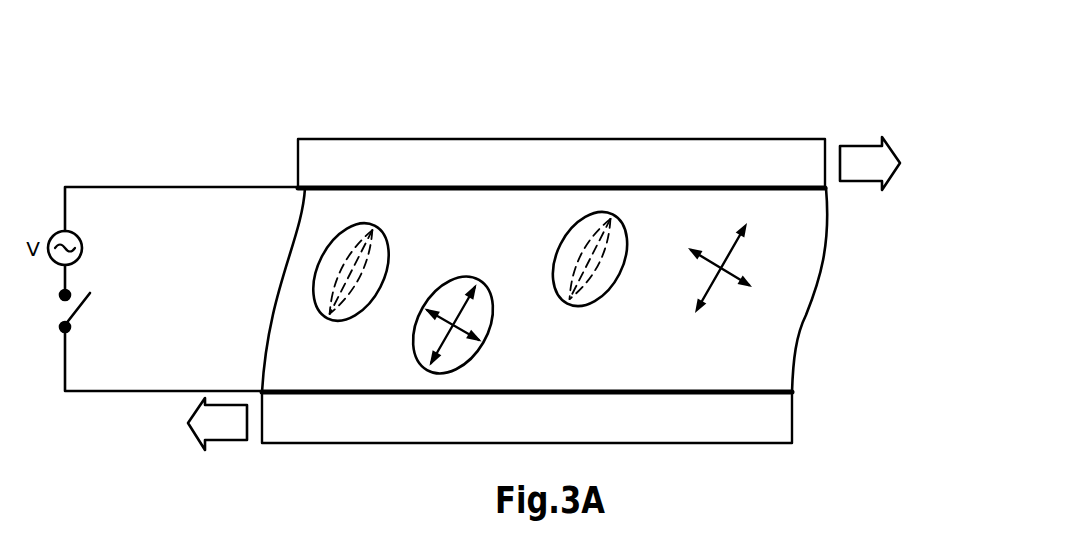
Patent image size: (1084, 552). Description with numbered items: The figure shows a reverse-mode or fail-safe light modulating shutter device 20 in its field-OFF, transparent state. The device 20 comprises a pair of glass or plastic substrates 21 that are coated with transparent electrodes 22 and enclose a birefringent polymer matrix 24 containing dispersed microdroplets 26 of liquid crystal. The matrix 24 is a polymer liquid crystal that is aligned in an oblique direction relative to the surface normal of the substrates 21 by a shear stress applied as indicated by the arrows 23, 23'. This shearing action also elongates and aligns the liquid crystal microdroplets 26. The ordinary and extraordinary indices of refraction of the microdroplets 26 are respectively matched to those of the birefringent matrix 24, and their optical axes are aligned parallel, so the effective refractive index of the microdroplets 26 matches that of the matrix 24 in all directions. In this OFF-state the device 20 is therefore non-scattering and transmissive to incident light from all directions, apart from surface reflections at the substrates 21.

The light modulating shutter device 20 is at (694, 99).
The substrate 21 is at (429, 139).
The transparent electrode 22 is at (347, 185).
The shear stress arrow 23 is at (870, 122).
The shear stress arrow 23' is at (195, 449).
The birefringent polymer matrix 24 is at (782, 347).
The liquid crystal microdroplet 26 is at (500, 326).